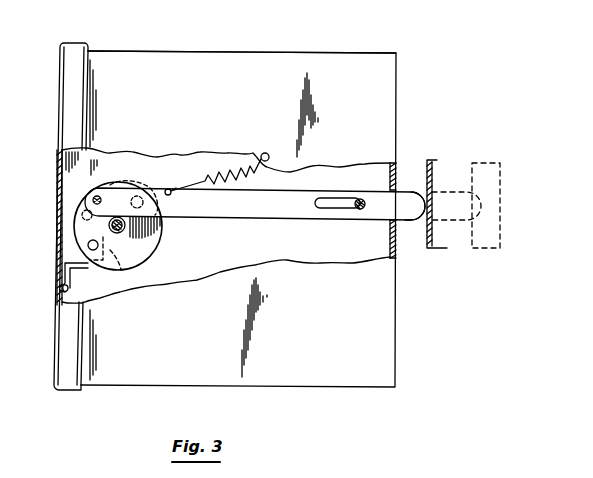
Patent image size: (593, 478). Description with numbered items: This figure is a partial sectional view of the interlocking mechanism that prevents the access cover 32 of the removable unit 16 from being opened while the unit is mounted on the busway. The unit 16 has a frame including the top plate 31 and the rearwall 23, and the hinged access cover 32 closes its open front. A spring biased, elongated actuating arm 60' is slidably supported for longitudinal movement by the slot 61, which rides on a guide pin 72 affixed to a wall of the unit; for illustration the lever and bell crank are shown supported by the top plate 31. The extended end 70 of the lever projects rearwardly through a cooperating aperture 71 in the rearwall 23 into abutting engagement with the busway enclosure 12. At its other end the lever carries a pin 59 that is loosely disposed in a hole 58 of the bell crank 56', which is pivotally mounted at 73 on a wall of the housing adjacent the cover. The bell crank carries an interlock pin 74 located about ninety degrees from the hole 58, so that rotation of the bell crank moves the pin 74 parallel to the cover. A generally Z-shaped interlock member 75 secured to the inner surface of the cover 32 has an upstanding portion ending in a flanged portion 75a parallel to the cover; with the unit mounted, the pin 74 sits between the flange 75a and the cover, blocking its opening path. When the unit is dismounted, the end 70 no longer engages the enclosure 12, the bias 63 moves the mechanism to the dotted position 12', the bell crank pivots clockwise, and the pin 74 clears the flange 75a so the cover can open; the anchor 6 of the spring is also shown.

The removable unit 16 is at (405, 340).
The top plate 31 is at (228, 53).
The access cover 32 is at (60, 81).
The rearwall 23 is at (394, 164).
The busway enclosure 12 is at (444, 192).
The panel in alternate position 12' is at (466, 218).
The bell crank 56' is at (134, 226).
The hole 58 is at (116, 189).
The pin 59 is at (96, 196).
The actuating arm 60' is at (255, 214).
The slot 61 is at (336, 208).
The bias 63 is at (216, 174).
The spring anchor 6 is at (168, 191).
The extended end 70 is at (412, 220).
The aperture 71 is at (393, 200).
The guide pin 72 is at (360, 199).
The pivot 73 is at (120, 231).
The interlock pin 74 is at (92, 262).
The interlock member 75 is at (58, 289).
The flanged portion 75a is at (122, 266).